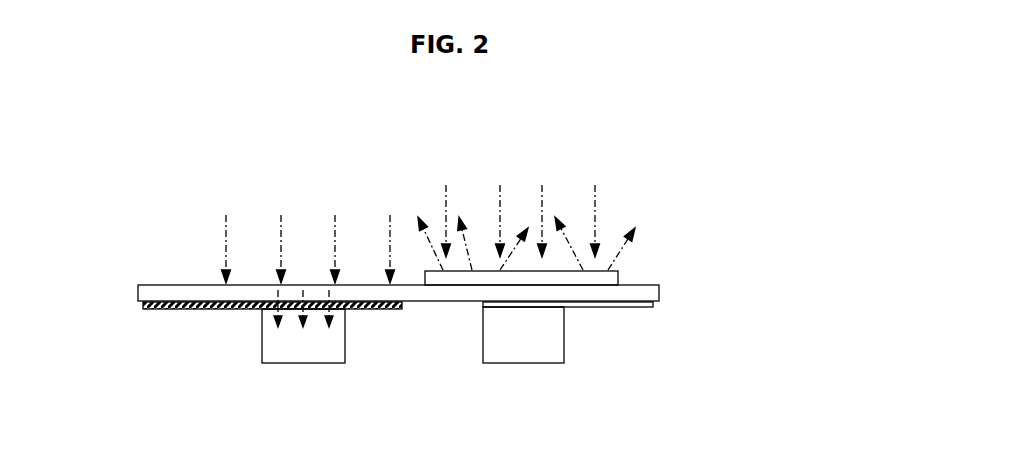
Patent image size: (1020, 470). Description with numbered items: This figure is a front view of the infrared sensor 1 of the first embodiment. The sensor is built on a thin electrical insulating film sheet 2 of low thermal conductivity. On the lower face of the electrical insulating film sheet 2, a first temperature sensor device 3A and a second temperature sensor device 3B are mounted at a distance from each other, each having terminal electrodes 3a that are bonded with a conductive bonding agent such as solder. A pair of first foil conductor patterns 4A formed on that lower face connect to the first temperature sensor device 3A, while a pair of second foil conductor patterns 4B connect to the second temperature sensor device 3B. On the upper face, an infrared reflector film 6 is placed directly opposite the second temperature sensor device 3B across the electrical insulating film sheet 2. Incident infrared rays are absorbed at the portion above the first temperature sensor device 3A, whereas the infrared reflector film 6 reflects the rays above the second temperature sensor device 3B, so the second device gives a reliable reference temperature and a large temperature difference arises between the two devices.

The infrared sensor 1 is at (662, 210).
The electrical insulating film sheet 2 is at (435, 302).
The first temperature sensor device 3A is at (303, 378).
The second temperature sensor device 3B is at (520, 375).
The terminal electrodes 3a is at (273, 342).
The first foil conductor patterns 4A is at (182, 310).
The second foil conductor patterns 4B is at (630, 307).
The infrared reflector film 6 is at (598, 268).